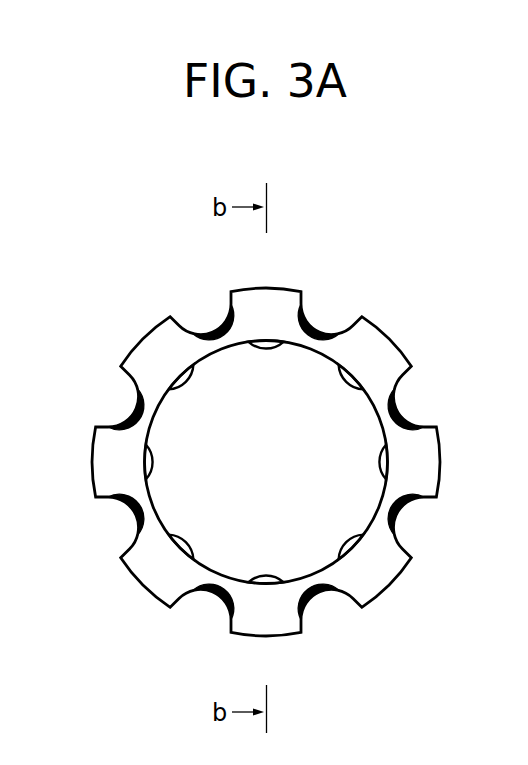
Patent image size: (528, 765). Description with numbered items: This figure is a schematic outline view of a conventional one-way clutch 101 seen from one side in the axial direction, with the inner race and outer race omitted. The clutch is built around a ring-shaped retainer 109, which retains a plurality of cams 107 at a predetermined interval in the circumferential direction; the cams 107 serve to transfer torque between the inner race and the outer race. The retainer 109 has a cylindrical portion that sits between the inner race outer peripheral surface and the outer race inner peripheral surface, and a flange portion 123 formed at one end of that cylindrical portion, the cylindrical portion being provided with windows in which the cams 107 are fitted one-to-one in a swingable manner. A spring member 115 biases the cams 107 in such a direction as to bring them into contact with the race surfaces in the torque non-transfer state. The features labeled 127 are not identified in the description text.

The one-way clutch 101 is at (318, 212).
The cams 107 is at (182, 386).
The retainer 109 is at (390, 332).
The spring member 115 is at (405, 405).
The flange portion 123 is at (378, 577).
The fixing portions 127 is at (228, 304).